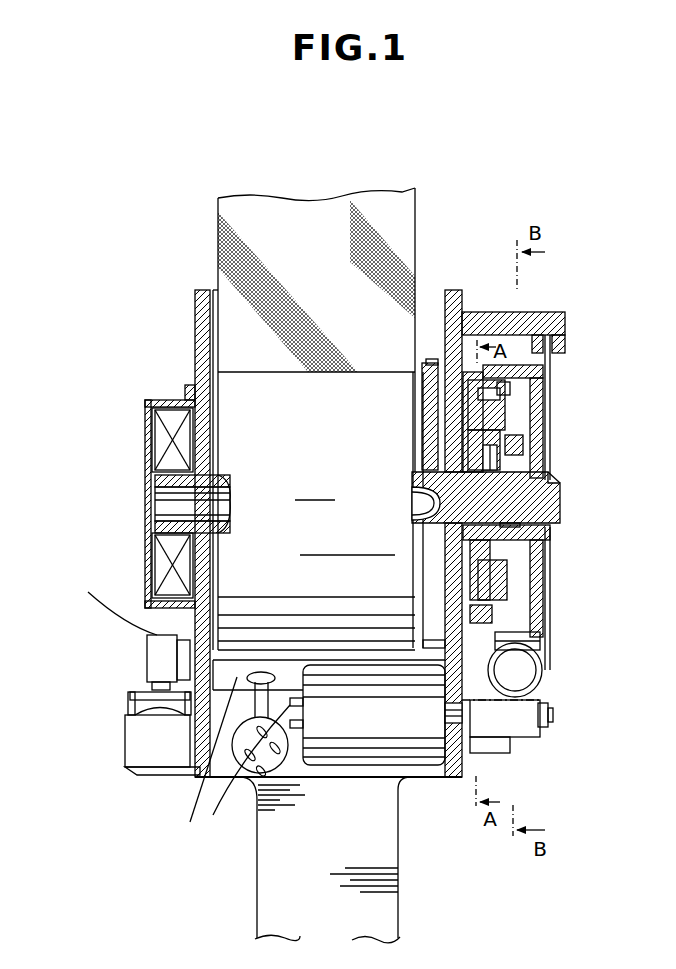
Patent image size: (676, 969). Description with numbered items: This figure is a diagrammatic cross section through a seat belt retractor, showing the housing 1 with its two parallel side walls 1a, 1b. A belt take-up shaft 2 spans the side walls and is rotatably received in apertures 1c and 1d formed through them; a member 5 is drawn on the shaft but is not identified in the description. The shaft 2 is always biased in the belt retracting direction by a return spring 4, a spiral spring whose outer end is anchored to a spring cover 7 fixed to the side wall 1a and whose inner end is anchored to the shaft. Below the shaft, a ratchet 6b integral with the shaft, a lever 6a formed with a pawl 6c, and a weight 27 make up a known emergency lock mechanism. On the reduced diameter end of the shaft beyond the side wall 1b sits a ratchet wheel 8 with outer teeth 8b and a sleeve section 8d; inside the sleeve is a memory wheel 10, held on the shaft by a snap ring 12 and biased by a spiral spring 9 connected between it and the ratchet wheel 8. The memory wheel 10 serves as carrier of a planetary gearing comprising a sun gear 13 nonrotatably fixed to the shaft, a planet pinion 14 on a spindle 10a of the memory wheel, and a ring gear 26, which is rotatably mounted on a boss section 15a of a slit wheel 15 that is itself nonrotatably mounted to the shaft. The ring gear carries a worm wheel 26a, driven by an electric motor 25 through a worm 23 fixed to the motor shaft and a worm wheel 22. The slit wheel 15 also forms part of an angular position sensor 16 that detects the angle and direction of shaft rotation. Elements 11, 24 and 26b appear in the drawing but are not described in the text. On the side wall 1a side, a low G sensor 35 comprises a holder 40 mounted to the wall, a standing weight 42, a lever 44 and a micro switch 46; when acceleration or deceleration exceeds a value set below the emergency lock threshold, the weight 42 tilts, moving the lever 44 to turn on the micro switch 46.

The housing 1 is at (438, 246).
The side wall 1a is at (200, 290).
The side wall 1b is at (452, 290).
The aperture 1c is at (172, 500).
The aperture 1d is at (486, 497).
The belt take-up shaft 2 is at (560, 490).
The return spring 4 is at (146, 571).
The shaft 5 is at (418, 202).
The lever 6a is at (222, 760).
The ratchet 6b is at (428, 363).
The pawl 6c is at (432, 657).
The spring cover 7 is at (170, 400).
The ratchet wheel 8 is at (497, 372).
The outer teeth 8b is at (490, 374).
The sleeve section 8d is at (490, 618).
The spiral spring 9 is at (474, 457).
The memory wheel 10 is at (505, 580).
The spindle 10a is at (488, 428).
The bearing 11 is at (540, 454).
The snap ring 12 is at (520, 560).
The sun gear 13 is at (512, 516).
The planet pinion 14 is at (518, 400).
The slit wheel 15 is at (552, 436).
The boss section 15a is at (553, 529).
The angular position sensor 16 is at (553, 312).
The worm wheel 22 is at (542, 680).
The worm 23 is at (525, 728).
The terminal 24 is at (553, 715).
The electric motor 25 is at (414, 748).
The ring gear 26 is at (538, 618).
The worm wheel 26a is at (542, 642).
The bracket portion 26b is at (518, 379).
The weight 27 is at (278, 771).
The low G sensor 35 is at (130, 672).
The holder 40 is at (132, 755).
The standing weight 42 is at (150, 710).
The lever 44 is at (150, 686).
The micro switch 46 is at (155, 652).